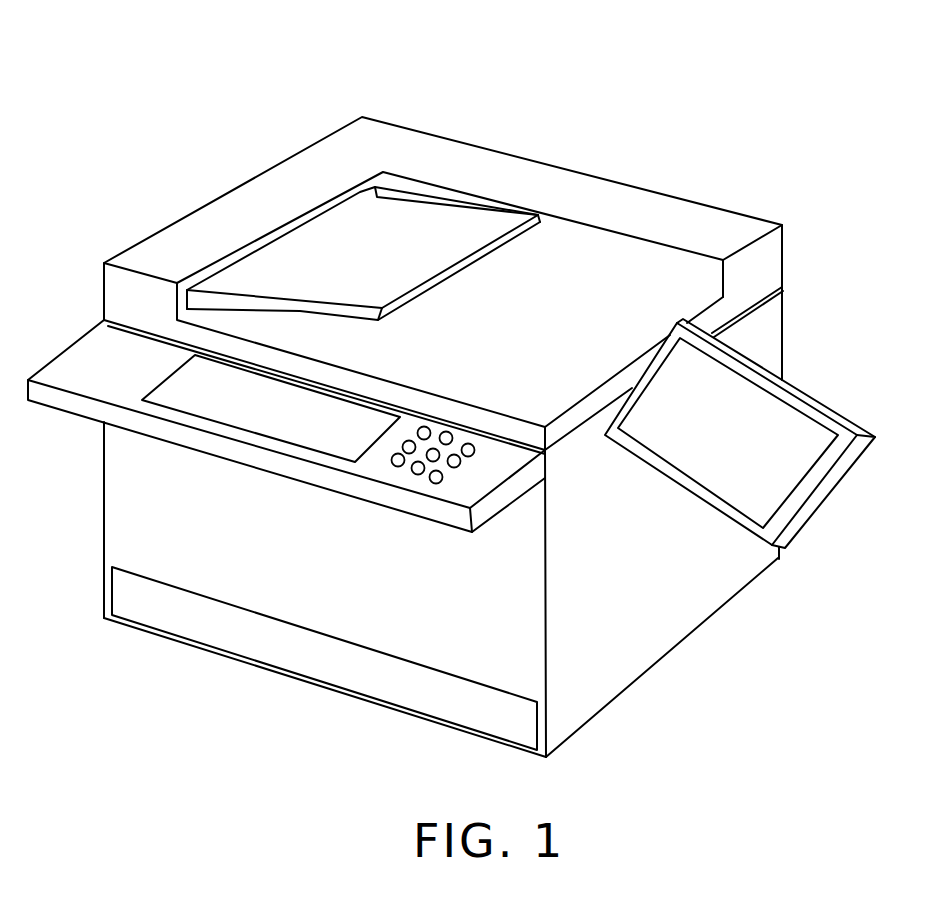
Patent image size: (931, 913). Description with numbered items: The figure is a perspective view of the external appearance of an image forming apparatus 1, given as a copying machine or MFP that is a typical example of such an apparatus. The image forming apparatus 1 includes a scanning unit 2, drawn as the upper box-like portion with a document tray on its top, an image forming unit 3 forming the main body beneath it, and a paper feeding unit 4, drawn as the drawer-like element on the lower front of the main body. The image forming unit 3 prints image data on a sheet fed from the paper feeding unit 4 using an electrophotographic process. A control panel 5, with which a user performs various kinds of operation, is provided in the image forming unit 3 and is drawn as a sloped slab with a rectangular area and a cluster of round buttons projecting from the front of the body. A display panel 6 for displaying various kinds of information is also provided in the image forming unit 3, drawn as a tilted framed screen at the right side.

The image forming apparatus 1 is at (451, 386).
The scanning unit 2 is at (270, 168).
The image forming unit 3 is at (103, 495).
The paper feeding unit 4 is at (242, 638).
The control panel 5 is at (482, 472).
The display panel 6 is at (767, 430).